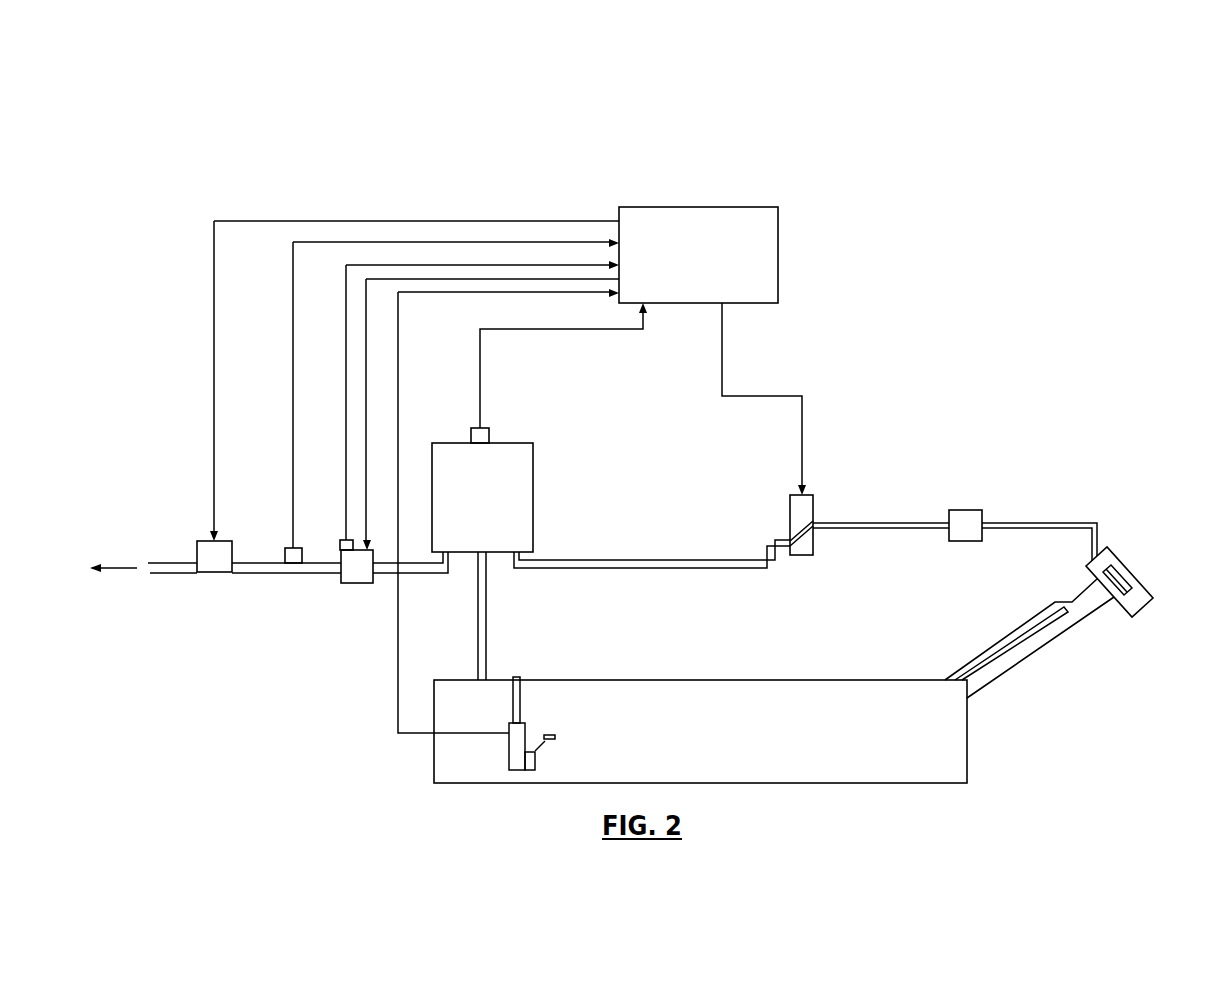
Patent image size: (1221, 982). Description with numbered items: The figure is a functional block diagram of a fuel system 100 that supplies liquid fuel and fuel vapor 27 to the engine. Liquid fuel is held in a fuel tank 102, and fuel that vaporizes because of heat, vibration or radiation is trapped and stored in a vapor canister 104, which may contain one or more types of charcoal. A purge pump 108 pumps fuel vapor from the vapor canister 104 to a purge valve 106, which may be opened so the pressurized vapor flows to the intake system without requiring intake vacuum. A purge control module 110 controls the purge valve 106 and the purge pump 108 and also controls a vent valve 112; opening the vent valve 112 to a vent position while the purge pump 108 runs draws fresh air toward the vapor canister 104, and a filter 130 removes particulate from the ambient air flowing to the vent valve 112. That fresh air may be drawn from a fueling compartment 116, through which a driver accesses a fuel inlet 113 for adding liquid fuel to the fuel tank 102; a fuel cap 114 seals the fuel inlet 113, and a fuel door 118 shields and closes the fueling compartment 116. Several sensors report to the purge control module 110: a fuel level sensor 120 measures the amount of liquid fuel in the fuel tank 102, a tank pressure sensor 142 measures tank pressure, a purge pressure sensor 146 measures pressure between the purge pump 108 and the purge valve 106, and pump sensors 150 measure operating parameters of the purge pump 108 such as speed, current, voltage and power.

The fuel system 100 is at (162, 78).
The fuel tank 102 is at (698, 680).
The vapor canister 104 is at (533, 463).
The purge valve 106 is at (209, 540).
The purge pump 108 is at (361, 583).
The purge control module 110 is at (696, 207).
The vent valve 112 is at (791, 493).
The fuel inlet 113 is at (1097, 597).
The fuel cap 114 is at (1128, 597).
The fueling compartment 116 is at (1146, 604).
The fuel door 118 is at (1133, 572).
The fuel level sensor 120 is at (526, 728).
The filter 130 is at (970, 510).
The tank pressure sensor 142 is at (469, 430).
The purge pressure sensor 146 is at (284, 548).
The pump sensors 150 is at (340, 546).
The fuel vapor 27 is at (110, 574).